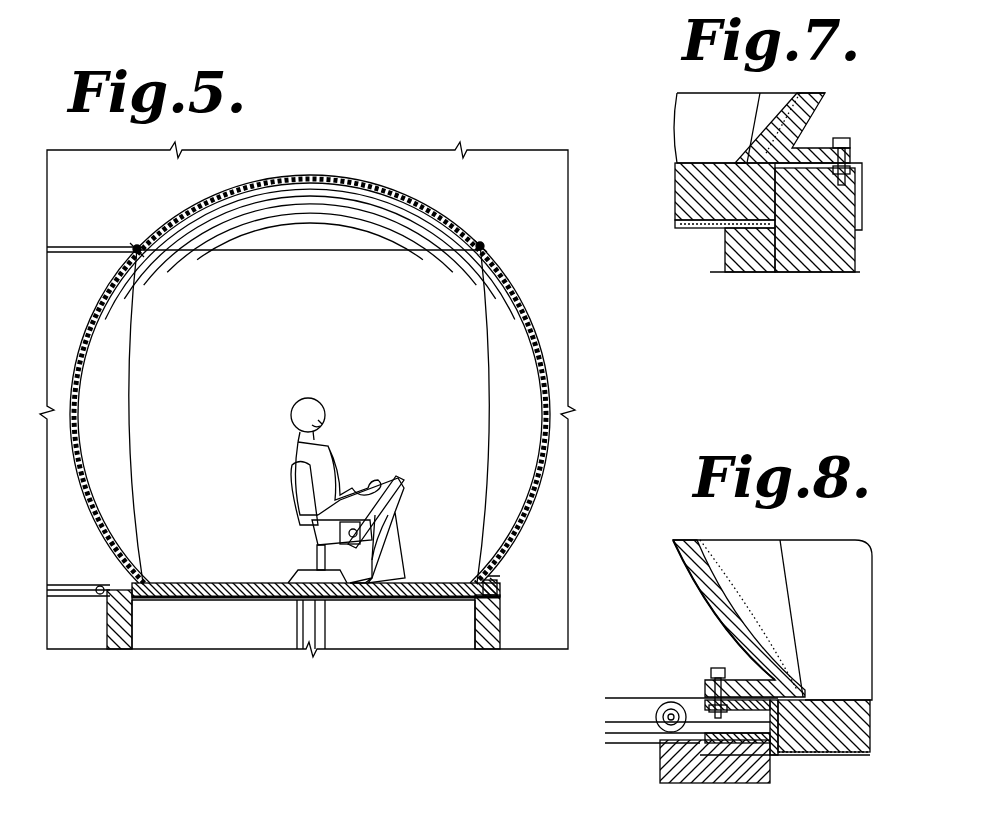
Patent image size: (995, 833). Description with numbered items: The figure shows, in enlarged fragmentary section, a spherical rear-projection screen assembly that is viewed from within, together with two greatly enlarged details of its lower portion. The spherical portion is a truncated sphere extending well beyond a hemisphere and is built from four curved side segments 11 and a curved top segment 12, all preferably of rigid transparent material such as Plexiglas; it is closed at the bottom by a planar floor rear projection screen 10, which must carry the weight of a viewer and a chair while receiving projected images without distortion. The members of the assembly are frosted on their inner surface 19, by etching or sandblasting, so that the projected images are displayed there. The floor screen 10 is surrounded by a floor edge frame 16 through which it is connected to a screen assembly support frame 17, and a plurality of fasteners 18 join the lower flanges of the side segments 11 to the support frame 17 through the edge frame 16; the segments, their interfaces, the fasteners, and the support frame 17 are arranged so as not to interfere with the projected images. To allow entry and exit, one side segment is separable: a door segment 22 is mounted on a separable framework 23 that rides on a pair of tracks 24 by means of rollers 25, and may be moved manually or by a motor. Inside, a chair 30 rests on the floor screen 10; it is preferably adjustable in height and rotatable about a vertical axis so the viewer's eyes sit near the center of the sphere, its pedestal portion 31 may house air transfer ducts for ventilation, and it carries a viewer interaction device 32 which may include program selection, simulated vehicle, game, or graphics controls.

In FIG. 5, the floor rear projection screen 10 is at (244, 583).
In FIG. 7, the floor rear projection screen 10 is at (678, 192).
In FIG. 8, the floor rear projection screen 10 is at (842, 700).
In FIG. 5, the side segments 11 is at (500, 270).
In FIG. 7, the side segments 11 is at (687, 106).
In FIG. 8, the side segments 11 is at (830, 547).
In FIG. 5, the top segment 12 is at (224, 190).
In FIG. 5, the floor edge frame 16 is at (502, 590).
In FIG. 7, the floor edge frame 16 is at (860, 208).
In FIG. 8, the floor edge frame 16 is at (815, 750).
In FIG. 5, the screen assembly support frame 17 is at (472, 631).
In FIG. 7, the screen assembly support frame 17 is at (825, 278).
In FIG. 8, the screen assembly support frame 17 is at (658, 765).
In FIG. 7, the fasteners 18 is at (848, 140).
In FIG. 8, the fasteners 18 is at (717, 668).
In FIG. 5, the inner surface 19 is at (348, 188).
In FIG. 7, the inner surface 19 is at (792, 97).
In FIG. 8, the inner surface 19 is at (741, 614).
In FIG. 5, the door segment 22 is at (100, 292).
In FIG. 8, the door segment 22 is at (684, 541).
In FIG. 5, the separable framework 23 is at (88, 246).
In FIG. 5, the tracks 24 is at (58, 583).
In FIG. 8, the tracks 24 is at (607, 727).
In FIG. 5, the rollers 25 is at (99, 586).
In FIG. 8, the rollers 25 is at (672, 700).
In FIG. 5, the chair 30 is at (290, 468).
In FIG. 5, the pedestal portion 31 is at (316, 556).
In FIG. 5, the viewer interaction device 32 is at (406, 480).